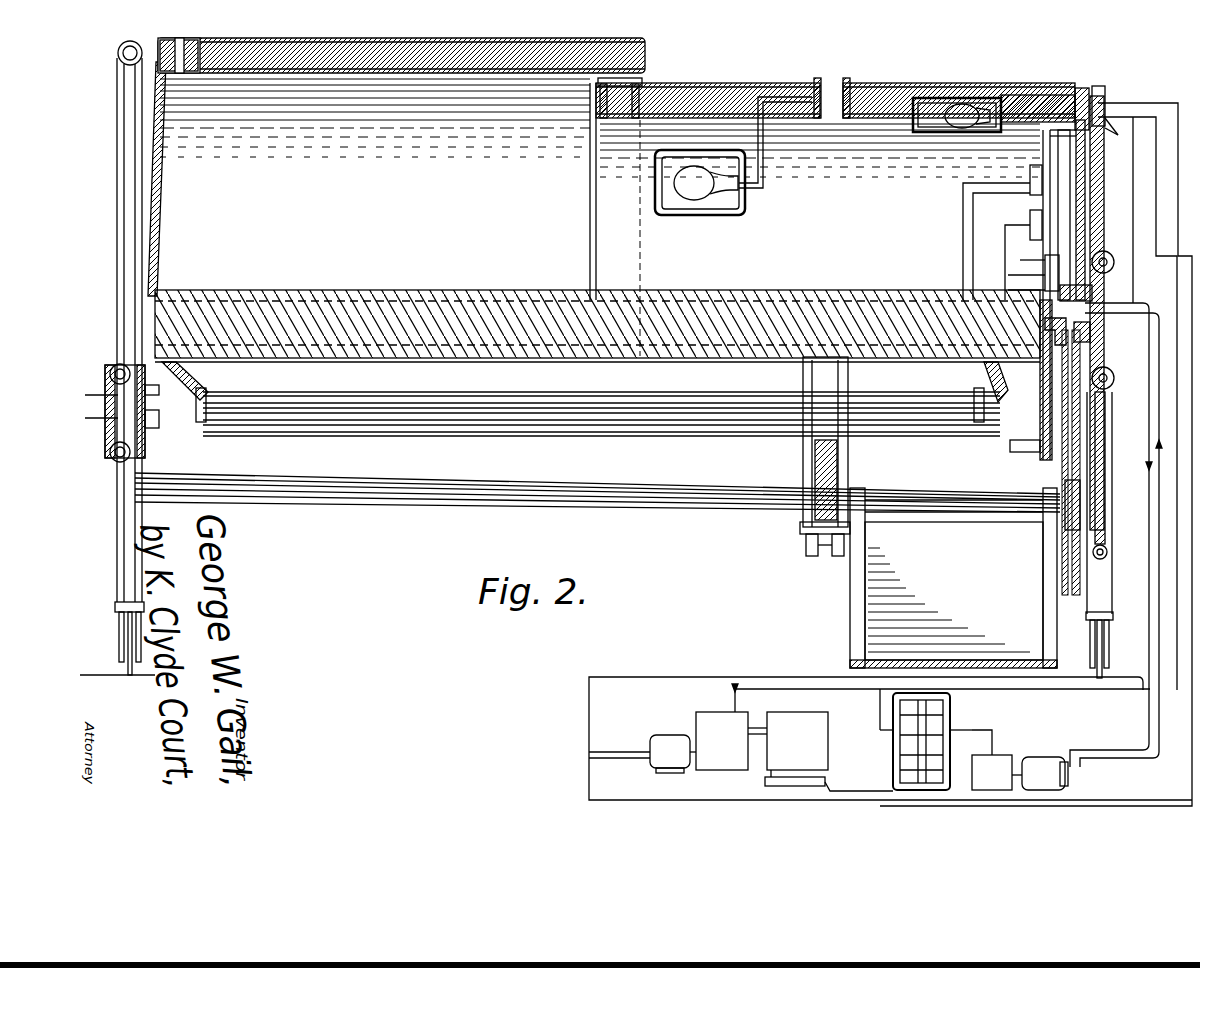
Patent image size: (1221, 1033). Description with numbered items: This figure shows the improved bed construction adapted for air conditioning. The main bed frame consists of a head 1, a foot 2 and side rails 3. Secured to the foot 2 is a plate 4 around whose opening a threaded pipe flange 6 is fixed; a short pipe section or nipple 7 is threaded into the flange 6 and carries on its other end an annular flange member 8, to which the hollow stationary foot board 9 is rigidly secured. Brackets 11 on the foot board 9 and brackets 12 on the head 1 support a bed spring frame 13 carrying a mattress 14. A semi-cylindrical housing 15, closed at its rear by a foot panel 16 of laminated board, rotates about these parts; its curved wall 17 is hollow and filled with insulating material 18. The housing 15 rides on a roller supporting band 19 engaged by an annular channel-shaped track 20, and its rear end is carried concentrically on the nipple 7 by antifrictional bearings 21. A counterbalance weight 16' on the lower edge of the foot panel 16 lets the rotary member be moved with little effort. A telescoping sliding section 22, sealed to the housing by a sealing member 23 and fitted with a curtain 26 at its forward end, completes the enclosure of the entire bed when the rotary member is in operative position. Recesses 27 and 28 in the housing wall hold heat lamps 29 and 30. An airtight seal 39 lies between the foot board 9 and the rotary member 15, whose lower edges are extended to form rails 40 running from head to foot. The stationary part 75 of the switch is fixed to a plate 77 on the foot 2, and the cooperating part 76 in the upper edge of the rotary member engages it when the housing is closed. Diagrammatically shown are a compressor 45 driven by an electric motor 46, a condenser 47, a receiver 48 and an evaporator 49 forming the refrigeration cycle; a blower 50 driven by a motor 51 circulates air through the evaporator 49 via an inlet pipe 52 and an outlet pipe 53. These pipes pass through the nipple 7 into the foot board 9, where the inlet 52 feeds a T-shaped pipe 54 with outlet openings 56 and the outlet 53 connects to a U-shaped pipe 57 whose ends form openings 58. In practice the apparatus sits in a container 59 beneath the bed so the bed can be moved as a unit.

The head 1 is at (125, 208).
The foot 2 is at (1108, 472).
The side rails 3 is at (446, 485).
The plate 4 is at (1090, 344).
The threaded pipe flange 6 is at (1092, 332).
The pipe section or nipple 7 is at (1092, 294).
The annular flange member 8 is at (1048, 328).
The stationary foot board 9 is at (1090, 142).
The brackets 11 is at (1015, 412).
The brackets 12 is at (150, 376).
The bed spring frame 13 is at (196, 388).
The mattress 14 is at (700, 303).
The semi-cylindrical housing 15 is at (606, 228).
The foot panel 16 is at (1113, 248).
The counterbalance weight 16' is at (1106, 507).
The curved wall 17 is at (796, 86).
The insulating material 18 is at (722, 96).
The roller supporting band 19 is at (805, 542).
The annular channel-shaped track 20 is at (834, 470).
The antifrictional bearings 21 is at (1050, 268).
The telescoping sliding section 22 is at (430, 52).
The sealing member 23 is at (603, 76).
The curtain 26 is at (157, 158).
The recess 27 is at (726, 209).
The recess 28 is at (941, 102).
The heat lamp 29 is at (695, 198).
The heat lamp 30 is at (970, 110).
The airtight seal 39 is at (1040, 97).
The rails 40 is at (340, 303).
The compressor 45 is at (706, 718).
The electric motor 46 is at (667, 740).
The condenser 47 is at (795, 718).
The receiver 48 is at (765, 781).
The evaporator 49 is at (906, 742).
The blower 50 is at (1004, 756).
The electric motor 51 is at (1050, 762).
The air inlet pipe 52 is at (1165, 406).
The air outlet pipe 53 is at (1180, 374).
The T-shaped pipe 54 is at (1040, 198).
The outlet openings 56 is at (1036, 162).
The U-shaped pipe 57 is at (1011, 289).
The outlet openings 58 is at (1011, 274).
The container 59 is at (953, 578).
The stationary part of the switch 75 is at (1100, 92).
The cooperating part of the switch 76 is at (1081, 88).
The plate 77 is at (1104, 196).